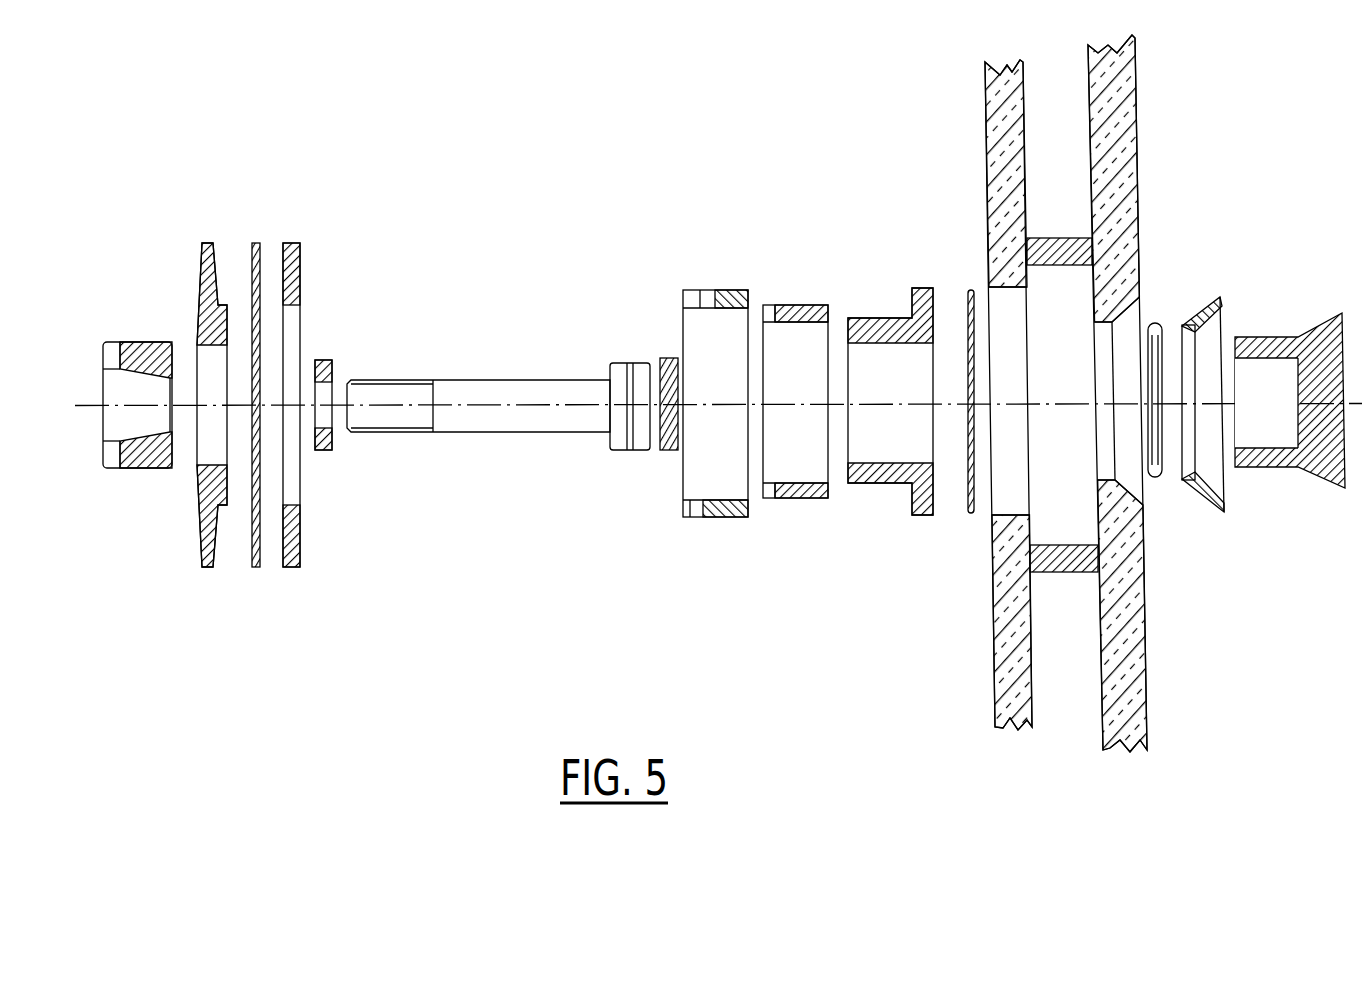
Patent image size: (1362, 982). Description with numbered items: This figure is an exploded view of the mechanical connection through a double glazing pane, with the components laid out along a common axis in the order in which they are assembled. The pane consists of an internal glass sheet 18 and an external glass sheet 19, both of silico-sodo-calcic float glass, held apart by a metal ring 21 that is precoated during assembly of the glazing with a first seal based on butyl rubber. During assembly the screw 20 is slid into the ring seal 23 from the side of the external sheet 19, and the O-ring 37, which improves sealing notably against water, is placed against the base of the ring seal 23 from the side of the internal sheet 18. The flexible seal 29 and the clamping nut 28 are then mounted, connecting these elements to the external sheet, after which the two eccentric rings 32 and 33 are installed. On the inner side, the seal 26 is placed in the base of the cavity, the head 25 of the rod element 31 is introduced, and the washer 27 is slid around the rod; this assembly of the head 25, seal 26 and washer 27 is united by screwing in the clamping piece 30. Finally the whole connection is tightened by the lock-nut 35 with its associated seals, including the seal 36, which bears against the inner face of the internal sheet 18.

The internal glass sheet 18 is at (1000, 137).
The external glass sheet 19 is at (1117, 110).
The screw 20 is at (1300, 345).
The metal ring 21 is at (1058, 238).
The ring seal 23 is at (1205, 325).
The head 25 is at (620, 365).
The seal 26 is at (666, 360).
The washer 27 is at (326, 360).
The clamping nut 28 is at (920, 292).
The flexible seal 29 is at (969, 292).
The clamping piece 30 is at (150, 350).
The rod element 31 is at (495, 385).
The eccentric ring 32 is at (797, 307).
The eccentric ring 33 is at (727, 292).
The lock-nut 35 is at (211, 243).
The seal 36 is at (296, 243).
The O-ring 37 is at (1152, 323).